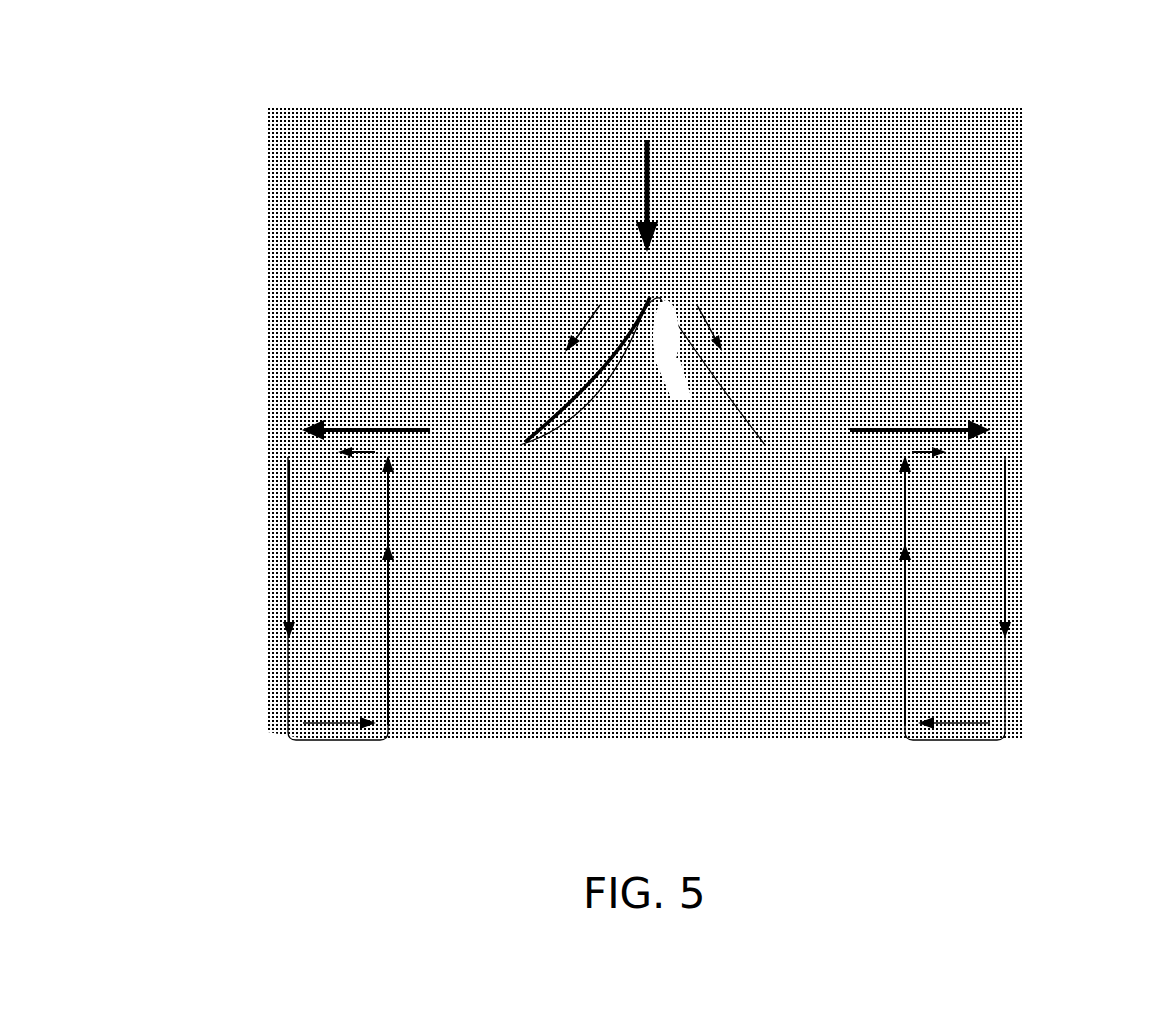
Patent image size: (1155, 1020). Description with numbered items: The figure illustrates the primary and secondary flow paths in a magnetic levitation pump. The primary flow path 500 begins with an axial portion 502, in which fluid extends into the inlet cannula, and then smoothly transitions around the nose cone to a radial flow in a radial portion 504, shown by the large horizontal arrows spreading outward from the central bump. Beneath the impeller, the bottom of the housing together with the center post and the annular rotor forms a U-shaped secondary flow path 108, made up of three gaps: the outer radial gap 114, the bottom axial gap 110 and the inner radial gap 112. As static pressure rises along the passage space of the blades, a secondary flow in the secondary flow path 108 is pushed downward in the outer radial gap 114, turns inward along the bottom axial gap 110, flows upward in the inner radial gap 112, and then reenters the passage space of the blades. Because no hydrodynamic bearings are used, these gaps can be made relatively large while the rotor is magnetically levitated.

The secondary flow path 108 is at (1012, 702).
The bottom axial gap 110 is at (910, 739).
The inner radial gap 112 is at (394, 581).
The outer radial gap 114 is at (272, 550).
The primary flow path 500 is at (742, 377).
The axial portion 502 is at (652, 154).
The radial portion 504 is at (922, 420).